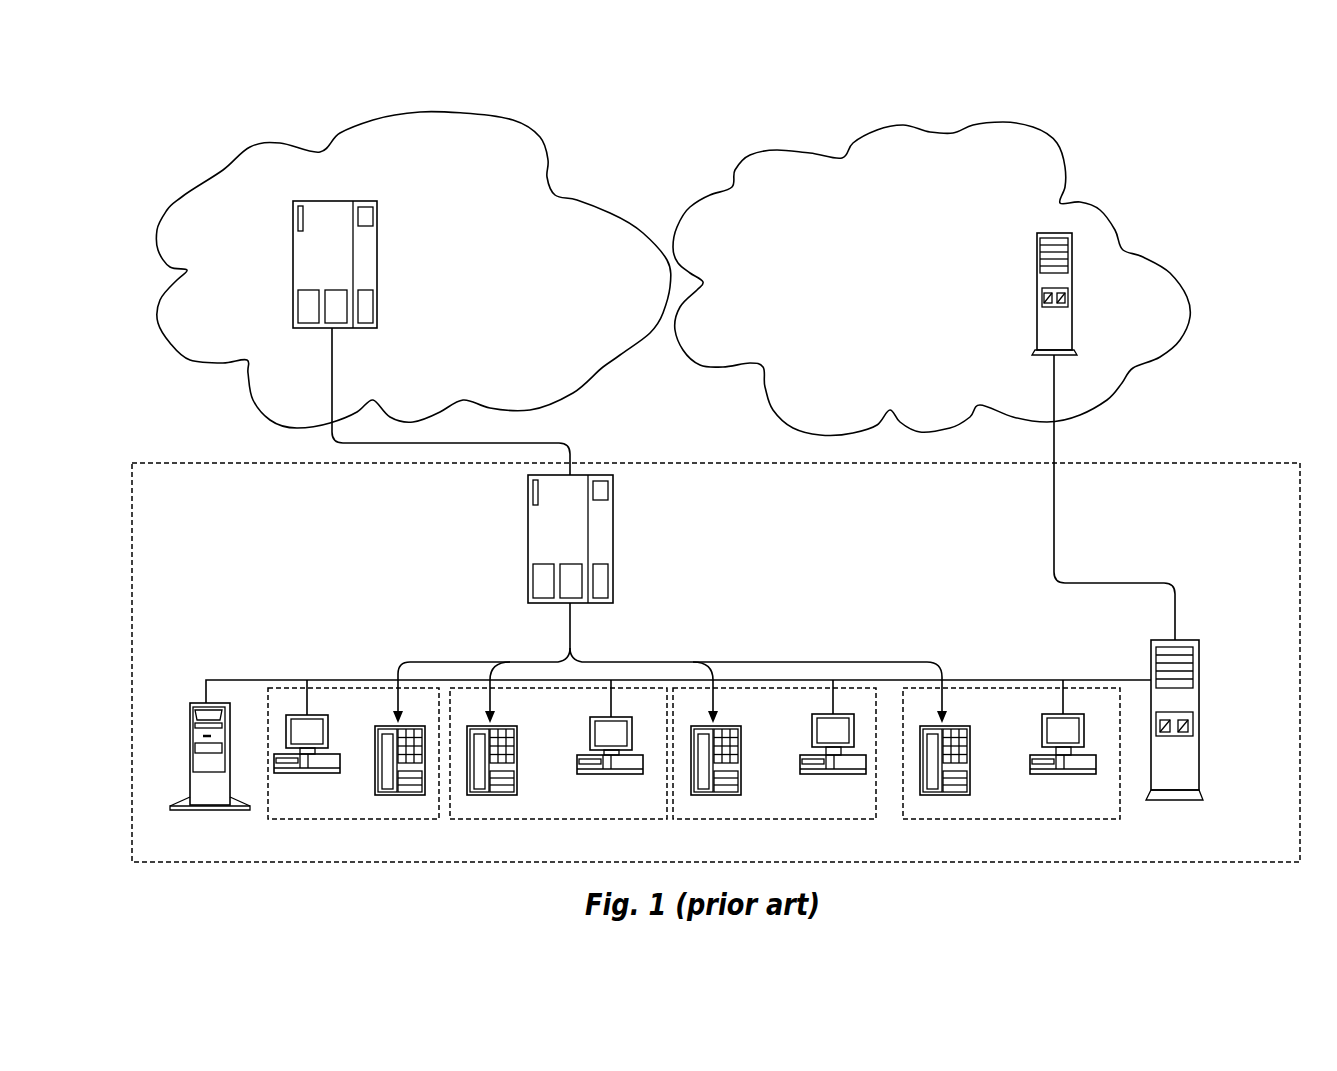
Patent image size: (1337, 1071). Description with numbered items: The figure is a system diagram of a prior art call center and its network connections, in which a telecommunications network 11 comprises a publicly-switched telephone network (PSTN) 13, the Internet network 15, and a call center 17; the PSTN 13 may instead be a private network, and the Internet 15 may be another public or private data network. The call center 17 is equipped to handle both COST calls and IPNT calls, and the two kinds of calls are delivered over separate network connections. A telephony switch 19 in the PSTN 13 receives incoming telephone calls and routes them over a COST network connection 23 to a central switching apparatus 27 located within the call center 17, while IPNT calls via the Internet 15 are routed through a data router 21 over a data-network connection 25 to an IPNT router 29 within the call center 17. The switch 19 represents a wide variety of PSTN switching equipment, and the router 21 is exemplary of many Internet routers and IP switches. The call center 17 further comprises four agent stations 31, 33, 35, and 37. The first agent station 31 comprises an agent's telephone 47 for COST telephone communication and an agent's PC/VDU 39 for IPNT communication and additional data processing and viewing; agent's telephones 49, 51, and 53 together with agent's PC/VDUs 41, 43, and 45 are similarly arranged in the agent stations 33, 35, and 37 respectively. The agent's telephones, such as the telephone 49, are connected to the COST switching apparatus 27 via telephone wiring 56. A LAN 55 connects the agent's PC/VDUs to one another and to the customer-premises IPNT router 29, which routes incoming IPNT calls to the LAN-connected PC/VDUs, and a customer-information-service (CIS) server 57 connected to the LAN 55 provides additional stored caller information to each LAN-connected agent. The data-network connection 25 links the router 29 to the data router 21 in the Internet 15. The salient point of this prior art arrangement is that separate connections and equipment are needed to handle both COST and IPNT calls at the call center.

The telecommunications network 11 is at (656, 112).
The publicly-switched telephone network (PSTN) 13 is at (183, 196).
The Internet network 15 is at (732, 187).
The call center 17 is at (1162, 452).
The telephony switch 19 is at (293, 280).
The data router 21 is at (1037, 307).
The COST network connection 23 is at (332, 392).
The data-network connection 25 is at (1050, 405).
The central switching apparatus 27 is at (613, 557).
The IPNT router 29 is at (1199, 678).
The agent station 31 is at (372, 818).
The agent station 33 is at (566, 818).
The agent station 35 is at (796, 818).
The agent station 37 is at (1022, 818).
The agent's PC/VDU 39 is at (332, 773).
The agent's PC/VDU 41 is at (587, 775).
The agent's PC/VDU 43 is at (810, 775).
The agent's PC/VDU 45 is at (1040, 775).
The agent's telephone 47 is at (384, 747).
The agent's telephone 49 is at (517, 753).
The agent's telephone 51 is at (740, 753).
The agent's telephone 53 is at (968, 760).
The LAN 55 is at (347, 678).
The telephone wiring 56 is at (762, 660).
The customer-information-service (CIS) server 57 is at (190, 758).